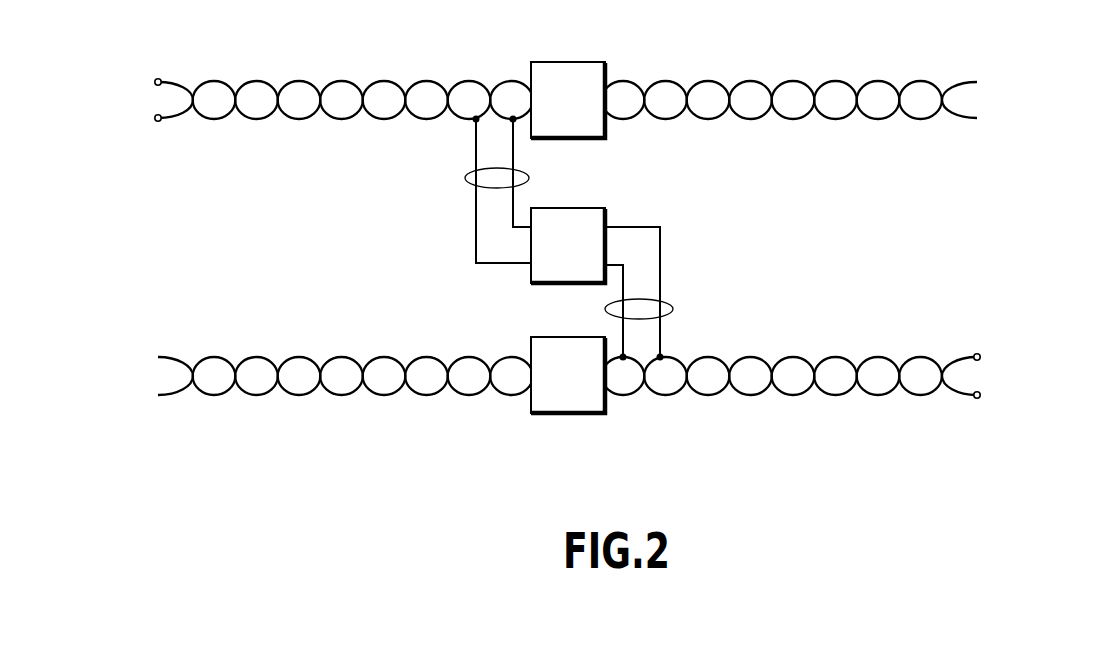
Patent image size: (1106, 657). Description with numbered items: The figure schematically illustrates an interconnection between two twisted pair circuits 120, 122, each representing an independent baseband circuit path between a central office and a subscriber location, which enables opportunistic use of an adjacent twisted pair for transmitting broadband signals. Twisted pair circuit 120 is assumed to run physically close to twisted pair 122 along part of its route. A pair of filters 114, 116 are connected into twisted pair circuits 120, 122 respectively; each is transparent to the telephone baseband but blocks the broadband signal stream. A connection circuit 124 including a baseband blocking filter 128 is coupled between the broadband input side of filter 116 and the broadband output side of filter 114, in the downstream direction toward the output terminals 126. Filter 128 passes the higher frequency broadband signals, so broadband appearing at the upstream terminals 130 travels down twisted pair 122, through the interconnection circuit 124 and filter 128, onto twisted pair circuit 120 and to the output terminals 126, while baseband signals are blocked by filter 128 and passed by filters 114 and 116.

The filter 114 is at (563, 62).
The filter 116 is at (560, 413).
The twisted pair circuit 120 is at (307, 80).
The twisted pair circuit 122 is at (835, 357).
The connection circuit 124 is at (466, 180).
The output terminals 126 is at (154, 83).
The baseband blocking filter 128 is at (563, 208).
The upstream terminals 130 is at (981, 358).